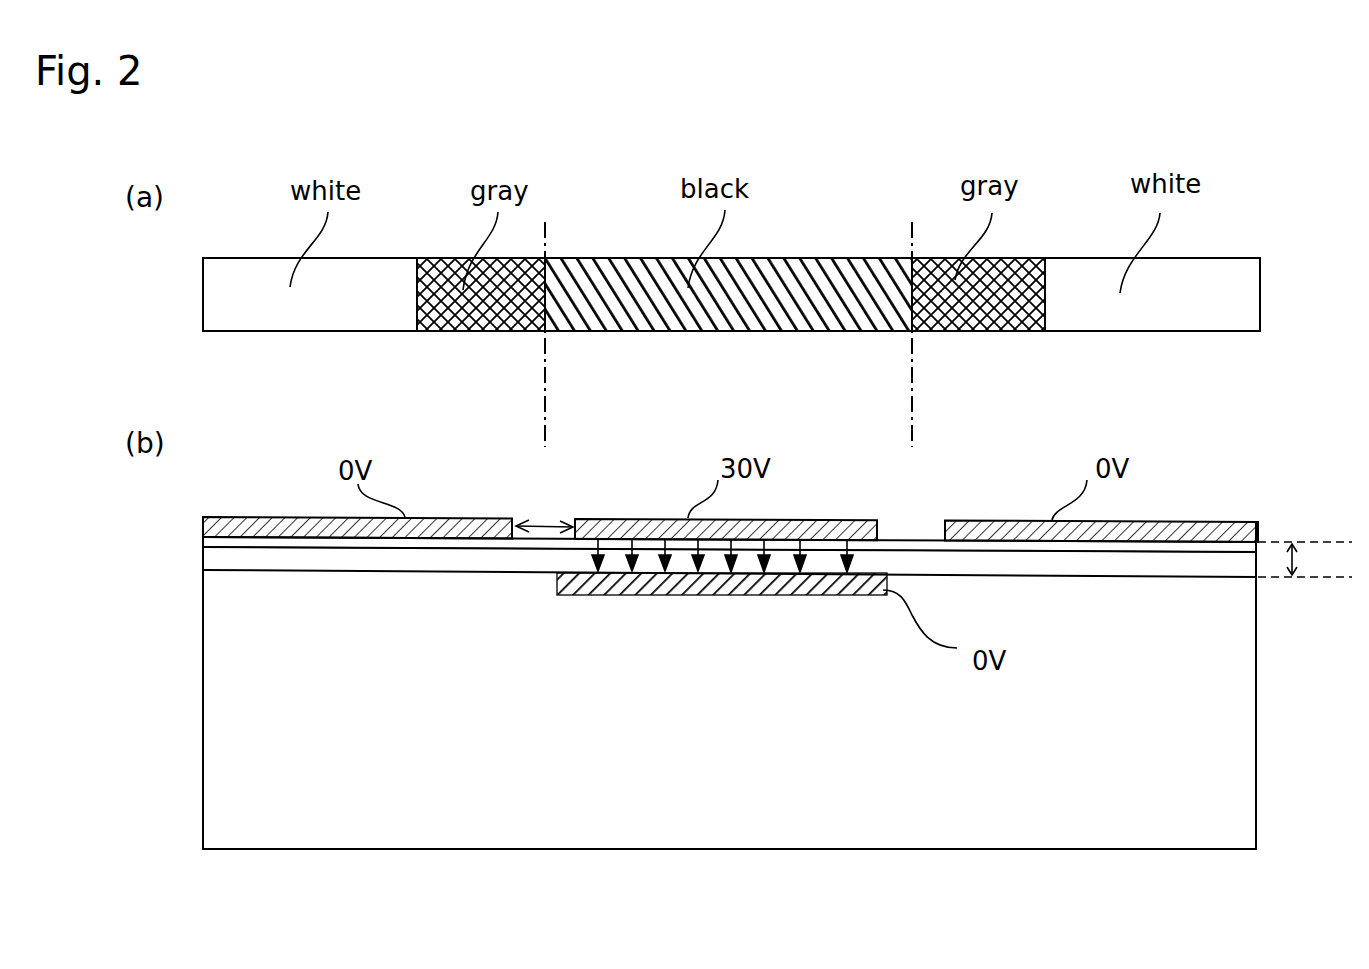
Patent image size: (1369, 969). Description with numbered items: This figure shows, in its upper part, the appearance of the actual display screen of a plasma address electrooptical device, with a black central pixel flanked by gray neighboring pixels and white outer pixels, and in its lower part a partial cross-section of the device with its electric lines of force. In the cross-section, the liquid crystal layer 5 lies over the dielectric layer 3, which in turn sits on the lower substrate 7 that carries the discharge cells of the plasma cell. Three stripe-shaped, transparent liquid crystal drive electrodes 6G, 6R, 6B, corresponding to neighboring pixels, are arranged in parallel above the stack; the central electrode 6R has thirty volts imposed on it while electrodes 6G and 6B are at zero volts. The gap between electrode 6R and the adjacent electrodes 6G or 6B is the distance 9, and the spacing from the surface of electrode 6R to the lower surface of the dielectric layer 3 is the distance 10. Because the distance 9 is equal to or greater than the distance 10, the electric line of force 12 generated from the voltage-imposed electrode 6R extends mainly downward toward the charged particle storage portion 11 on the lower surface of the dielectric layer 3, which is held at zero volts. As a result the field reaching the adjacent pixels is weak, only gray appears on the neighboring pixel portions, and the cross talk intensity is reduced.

The dielectric layer 3 is at (232, 557).
The liquid crystal layer 5 is at (232, 542).
The liquid crystal drive electrode 6G is at (330, 517).
The liquid crystal drive electrode 6R is at (800, 518).
The liquid crystal drive electrode 6B is at (1165, 520).
The lower substrate 7 is at (243, 768).
The distance between adjacent liquid crystal drive electrodes 9 is at (545, 522).
The distance between electrode surface and dielectric layer lower surface 10 is at (1305, 564).
The charged particle storage portion 11 is at (887, 585).
The electric line of force 12 is at (866, 556).